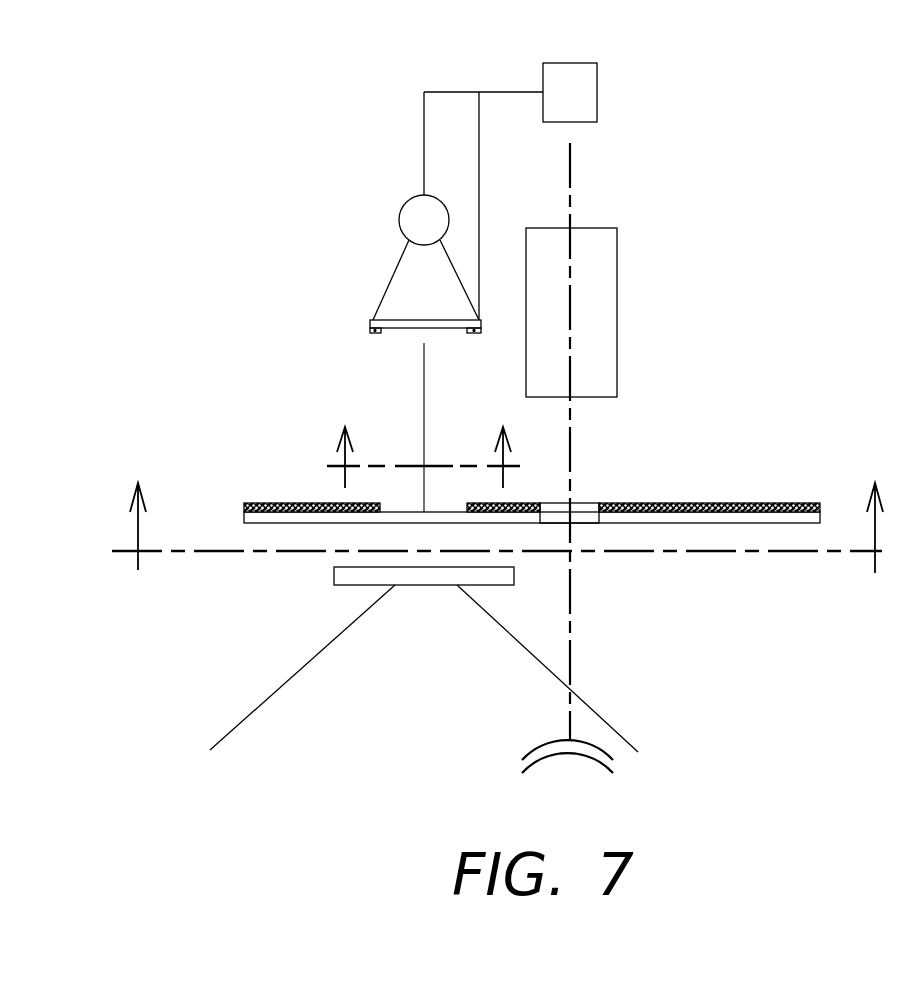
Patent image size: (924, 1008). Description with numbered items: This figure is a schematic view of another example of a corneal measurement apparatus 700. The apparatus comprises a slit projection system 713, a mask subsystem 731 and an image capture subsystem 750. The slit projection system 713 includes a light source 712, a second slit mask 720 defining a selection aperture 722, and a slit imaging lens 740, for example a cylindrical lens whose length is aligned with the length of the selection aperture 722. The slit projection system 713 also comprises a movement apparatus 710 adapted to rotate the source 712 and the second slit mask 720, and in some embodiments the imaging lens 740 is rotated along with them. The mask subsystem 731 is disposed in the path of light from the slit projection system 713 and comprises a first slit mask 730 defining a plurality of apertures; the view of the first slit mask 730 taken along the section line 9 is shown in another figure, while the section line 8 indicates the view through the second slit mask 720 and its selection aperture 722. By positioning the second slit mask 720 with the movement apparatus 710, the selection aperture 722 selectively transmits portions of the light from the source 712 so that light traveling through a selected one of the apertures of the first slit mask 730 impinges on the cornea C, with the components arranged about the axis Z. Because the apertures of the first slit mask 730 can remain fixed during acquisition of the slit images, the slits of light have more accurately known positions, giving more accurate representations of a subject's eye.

The corneal measurement apparatus 700 is at (188, 165).
The movement apparatus 710 is at (597, 63).
The light source 712 is at (406, 201).
The slit projection system 713 is at (292, 203).
The second slit mask 720 is at (370, 316).
The selection aperture 722 is at (410, 334).
The first slit mask 730 is at (645, 503).
The mask subsystem 731 is at (208, 491).
The slit imaging lens 740 is at (336, 586).
The image capture subsystem 750 is at (617, 228).
The Z axis Z is at (570, 165).
The cornea C is at (543, 742).
The section line 8- 8 is at (423, 439).
The section line 9- 9 is at (499, 504).